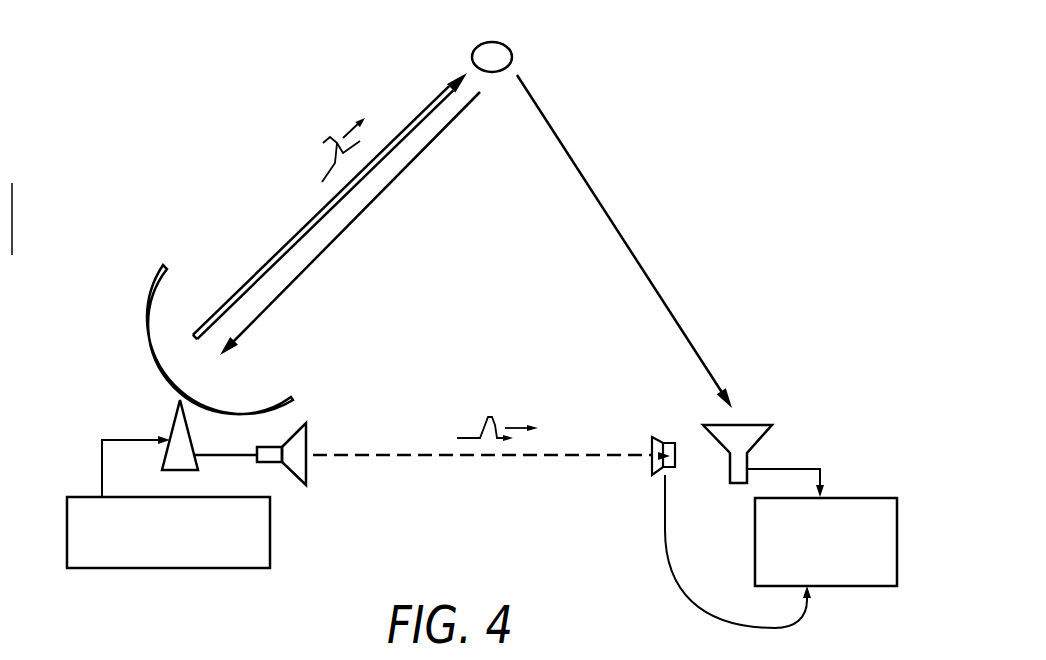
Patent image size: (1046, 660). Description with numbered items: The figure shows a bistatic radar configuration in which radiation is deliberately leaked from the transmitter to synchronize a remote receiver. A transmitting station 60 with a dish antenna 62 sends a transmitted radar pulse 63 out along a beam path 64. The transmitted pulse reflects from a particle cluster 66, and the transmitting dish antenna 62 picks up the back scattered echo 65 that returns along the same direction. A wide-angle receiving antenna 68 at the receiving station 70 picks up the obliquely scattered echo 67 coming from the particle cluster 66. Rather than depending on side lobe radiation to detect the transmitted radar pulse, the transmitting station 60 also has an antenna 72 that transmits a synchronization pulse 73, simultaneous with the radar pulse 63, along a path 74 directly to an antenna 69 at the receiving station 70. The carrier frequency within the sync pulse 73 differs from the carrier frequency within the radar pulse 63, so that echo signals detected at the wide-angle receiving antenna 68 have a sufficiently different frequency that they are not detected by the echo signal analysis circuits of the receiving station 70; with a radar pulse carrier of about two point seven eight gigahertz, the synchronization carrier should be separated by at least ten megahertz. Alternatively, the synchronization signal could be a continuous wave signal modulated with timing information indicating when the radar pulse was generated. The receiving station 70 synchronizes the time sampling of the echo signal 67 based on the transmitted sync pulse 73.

The transmitting station 60 is at (187, 568).
The dish antenna 62 is at (147, 297).
The radar pulse 63 is at (323, 143).
The beam path 64 is at (283, 242).
The back scattered echo 65 is at (348, 227).
The particle cluster 66 is at (512, 56).
The obliquely scattered echo 67 is at (612, 227).
The wide-angle receiving antenna 68 is at (757, 425).
The antenna 69 is at (665, 438).
The receiving station 70 is at (853, 497).
The antenna 72 is at (304, 473).
The synchronization pulse 73 is at (486, 418).
The path 74 is at (600, 454).